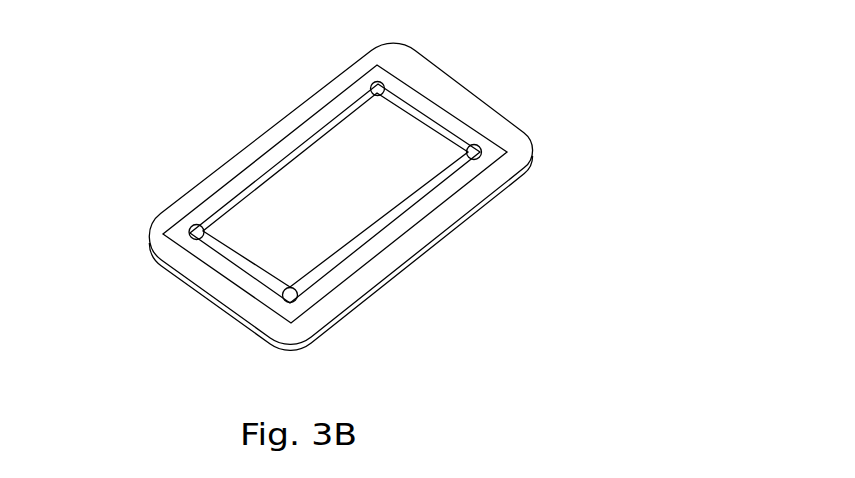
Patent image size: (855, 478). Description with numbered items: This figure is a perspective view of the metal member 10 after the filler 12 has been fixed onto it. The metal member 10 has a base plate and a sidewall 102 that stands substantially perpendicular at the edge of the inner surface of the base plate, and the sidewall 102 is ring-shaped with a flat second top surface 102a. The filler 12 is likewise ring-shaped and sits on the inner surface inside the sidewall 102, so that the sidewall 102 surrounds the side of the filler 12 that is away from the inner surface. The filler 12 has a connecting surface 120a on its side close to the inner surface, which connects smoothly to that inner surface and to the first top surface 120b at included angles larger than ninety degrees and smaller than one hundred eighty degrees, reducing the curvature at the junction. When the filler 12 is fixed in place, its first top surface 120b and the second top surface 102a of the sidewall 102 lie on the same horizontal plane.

The metal member 10 is at (292, 175).
The sidewall 102 is at (221, 166).
The second top surface 102a is at (488, 113).
The filler 12 is at (335, 151).
The connecting surface 120a is at (342, 121).
The first top surface 120b is at (283, 149).